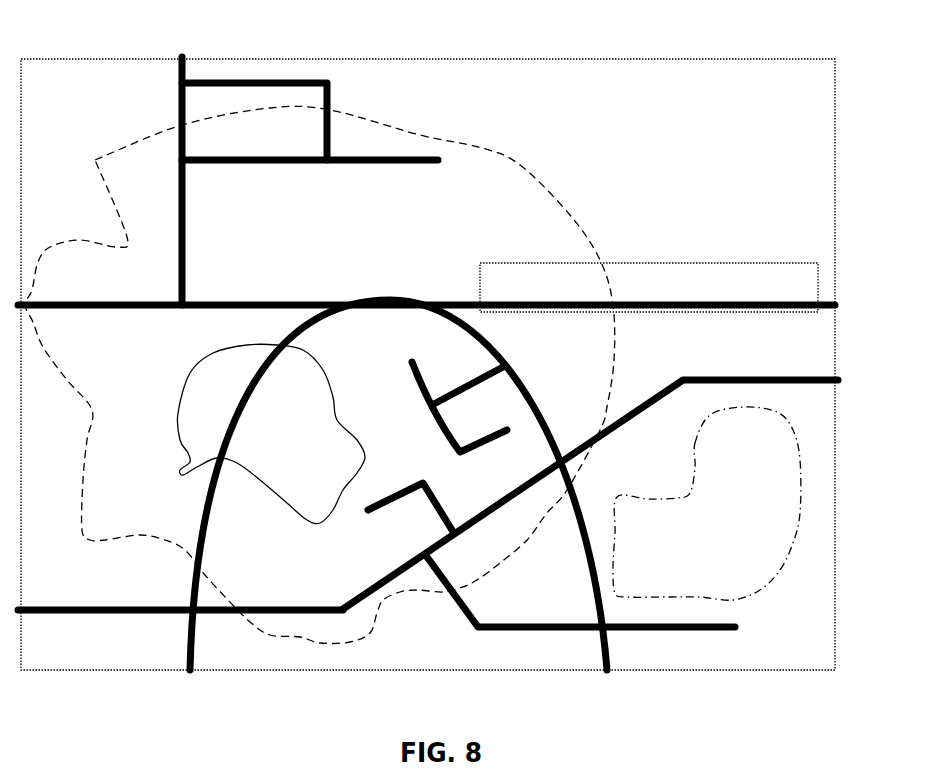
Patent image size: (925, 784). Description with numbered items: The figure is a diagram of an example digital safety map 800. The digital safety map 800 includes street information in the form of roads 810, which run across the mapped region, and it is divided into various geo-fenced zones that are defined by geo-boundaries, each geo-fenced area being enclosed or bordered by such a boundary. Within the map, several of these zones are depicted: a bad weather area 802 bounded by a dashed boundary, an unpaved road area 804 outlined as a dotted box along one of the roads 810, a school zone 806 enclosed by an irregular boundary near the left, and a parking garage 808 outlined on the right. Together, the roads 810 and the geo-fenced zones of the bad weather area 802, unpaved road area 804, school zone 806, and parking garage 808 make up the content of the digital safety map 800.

The digital safety map 800 is at (697, 80).
The bad weather area 802 is at (482, 160).
The unpaved road area 804 is at (683, 262).
The school zone 806 is at (290, 390).
The parking garage 808 is at (800, 480).
The roads 810 is at (68, 608).